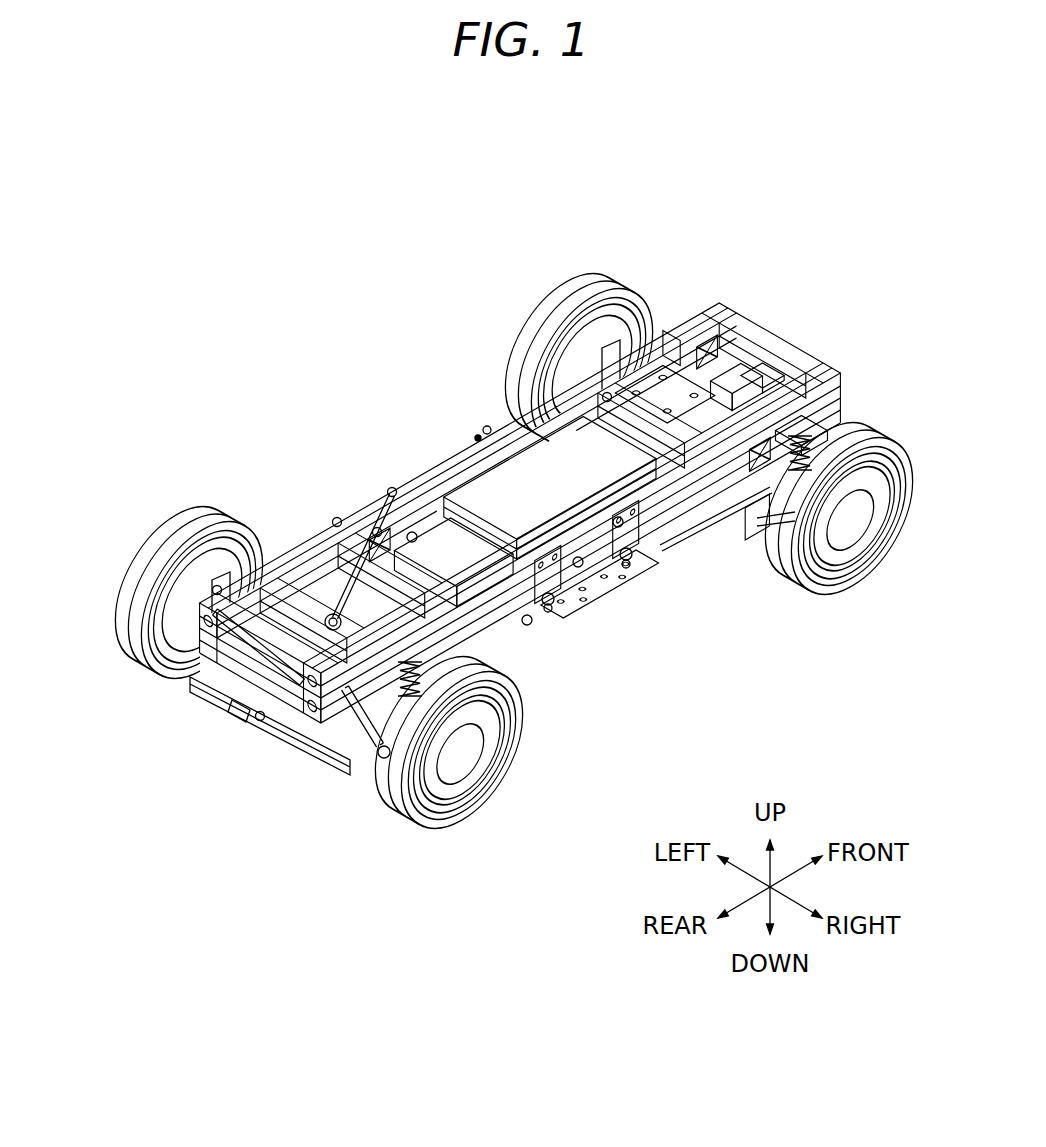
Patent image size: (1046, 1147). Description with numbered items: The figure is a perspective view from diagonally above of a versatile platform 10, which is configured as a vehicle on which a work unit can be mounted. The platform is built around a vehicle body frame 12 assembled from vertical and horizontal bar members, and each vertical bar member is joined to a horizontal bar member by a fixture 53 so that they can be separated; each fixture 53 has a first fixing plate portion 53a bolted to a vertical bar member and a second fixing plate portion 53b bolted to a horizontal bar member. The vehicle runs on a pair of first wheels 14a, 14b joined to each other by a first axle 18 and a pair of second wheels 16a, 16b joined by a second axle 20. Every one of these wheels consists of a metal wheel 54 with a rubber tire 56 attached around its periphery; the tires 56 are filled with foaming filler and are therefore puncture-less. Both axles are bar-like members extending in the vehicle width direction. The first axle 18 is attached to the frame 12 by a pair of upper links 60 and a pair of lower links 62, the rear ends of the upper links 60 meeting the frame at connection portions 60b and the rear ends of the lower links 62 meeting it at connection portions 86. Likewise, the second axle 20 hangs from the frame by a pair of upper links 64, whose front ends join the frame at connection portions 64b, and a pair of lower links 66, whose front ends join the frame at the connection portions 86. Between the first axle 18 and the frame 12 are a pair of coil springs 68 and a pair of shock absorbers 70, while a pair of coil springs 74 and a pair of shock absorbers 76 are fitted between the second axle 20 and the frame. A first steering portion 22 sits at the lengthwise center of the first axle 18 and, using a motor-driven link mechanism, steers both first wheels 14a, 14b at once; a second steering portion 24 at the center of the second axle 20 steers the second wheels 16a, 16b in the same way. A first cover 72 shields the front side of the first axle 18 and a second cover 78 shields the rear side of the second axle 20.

The versatile platform 10 is at (152, 118).
The vehicle body frame 12 is at (464, 438).
The first wheel 14a is at (558, 290).
The first wheel 14b is at (880, 422).
The second wheel 16a is at (156, 525).
The second wheel 16b is at (457, 830).
The first axle 18 is at (734, 498).
The second axle 20 is at (278, 705).
The first steering portion 22 is at (738, 372).
The second steering portion 24 is at (193, 678).
The fixture 53 is at (605, 394).
The first fixing plate portion 53a is at (337, 520).
The second fixing plate portion 53b is at (392, 490).
The wheel 54 is at (863, 530).
The tire 56 is at (606, 286).
The upper link 60 is at (677, 523).
The connection portion 60b is at (618, 522).
The lower link 62 is at (657, 520).
The upper link 64 is at (551, 600).
The connection portion 64b is at (578, 562).
The lower link 66 is at (528, 622).
The coil spring 68 is at (803, 432).
The shock absorber 70 is at (676, 391).
The first cover 72 is at (752, 378).
The coil spring 74 is at (383, 752).
The shock absorber 76 is at (332, 705).
The second cover 78 is at (240, 712).
The connection portion 86 is at (597, 597).